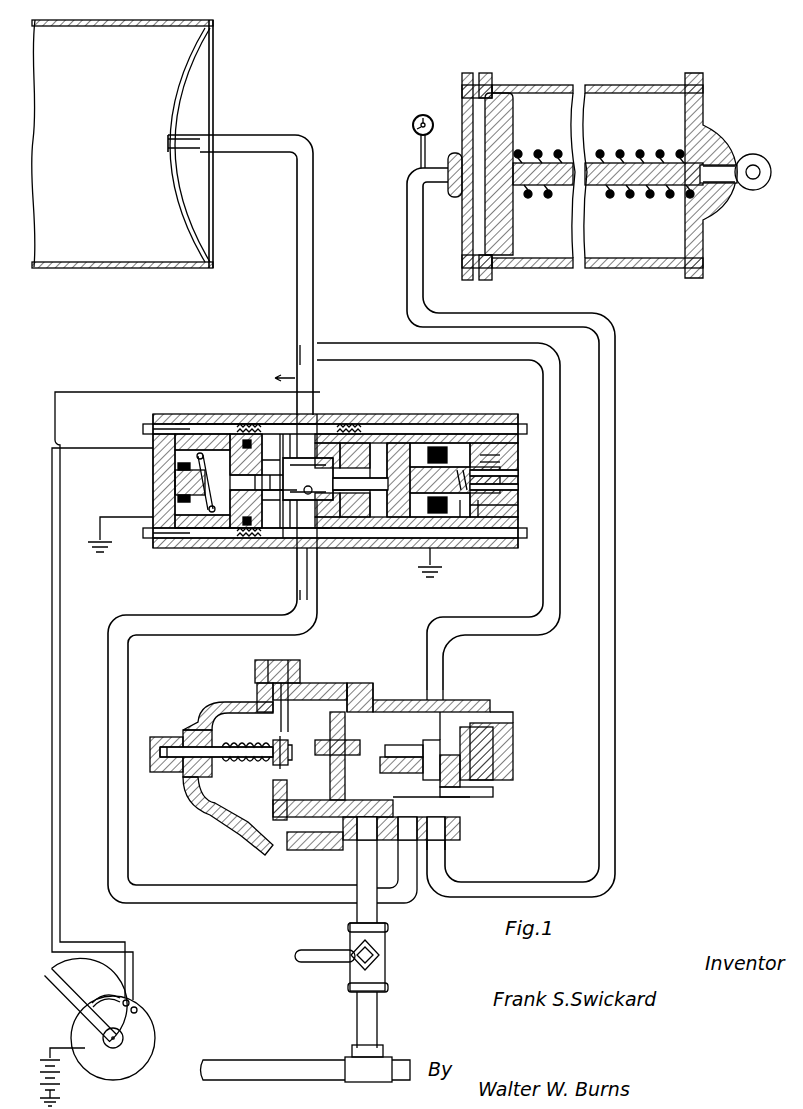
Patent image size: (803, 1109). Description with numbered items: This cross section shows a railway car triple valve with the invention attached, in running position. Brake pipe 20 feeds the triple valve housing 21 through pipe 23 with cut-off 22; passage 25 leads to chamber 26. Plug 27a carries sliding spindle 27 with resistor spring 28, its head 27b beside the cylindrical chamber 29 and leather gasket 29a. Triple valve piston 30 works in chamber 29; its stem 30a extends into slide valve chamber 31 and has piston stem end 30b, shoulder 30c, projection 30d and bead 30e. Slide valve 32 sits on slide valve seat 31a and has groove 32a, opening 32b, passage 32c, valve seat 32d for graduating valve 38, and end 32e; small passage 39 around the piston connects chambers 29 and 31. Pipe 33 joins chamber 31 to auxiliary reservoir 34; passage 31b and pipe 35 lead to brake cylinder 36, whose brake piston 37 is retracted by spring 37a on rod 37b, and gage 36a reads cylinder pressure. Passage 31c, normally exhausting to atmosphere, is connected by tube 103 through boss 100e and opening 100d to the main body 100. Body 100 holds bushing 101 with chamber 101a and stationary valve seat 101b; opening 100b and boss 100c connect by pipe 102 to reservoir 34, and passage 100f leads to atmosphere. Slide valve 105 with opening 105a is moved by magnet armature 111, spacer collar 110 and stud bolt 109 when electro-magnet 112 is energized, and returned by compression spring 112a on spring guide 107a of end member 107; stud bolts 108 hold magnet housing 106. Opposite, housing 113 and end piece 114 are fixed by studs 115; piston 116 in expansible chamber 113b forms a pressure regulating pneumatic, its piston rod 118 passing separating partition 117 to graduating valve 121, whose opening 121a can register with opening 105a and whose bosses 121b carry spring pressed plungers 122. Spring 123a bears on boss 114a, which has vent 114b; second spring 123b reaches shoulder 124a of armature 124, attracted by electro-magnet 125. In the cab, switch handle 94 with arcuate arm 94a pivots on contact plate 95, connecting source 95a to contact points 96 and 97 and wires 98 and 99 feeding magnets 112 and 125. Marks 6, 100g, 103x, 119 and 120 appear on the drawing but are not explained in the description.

The brake pipe 20 is at (280, 1060).
The triple valve housing 21 is at (268, 660).
The cut-off 22 is at (350, 973).
The pipe 23 is at (357, 910).
The passage 25 is at (300, 848).
The chamber 26 is at (240, 795).
The spindle 27 is at (225, 752).
The plug 27a is at (165, 737).
The head 27b is at (276, 746).
The resistor spring 28 is at (245, 760).
The chamber 29 is at (312, 690).
The leather gasket 29a is at (258, 702).
The triple valve piston 30 is at (360, 700).
The stem 30a is at (485, 712).
The piston stem end 30b is at (495, 725).
The shoulder 30c is at (440, 740).
The projection 30d is at (325, 745).
The bead 30e is at (328, 797).
The slide valve chamber 31 is at (452, 705).
The slide valve seat 31a is at (350, 850).
The passage 31b is at (445, 810).
The passage 31c is at (412, 885).
The slide valve 32 is at (485, 758).
The groove or chamber 32a is at (400, 745).
The opening 32b is at (428, 742).
The passage 32c is at (452, 755).
The valve seat 32d is at (470, 792).
The end 32e is at (475, 782).
The pipe 33 is at (275, 152).
The auxiliary reservoir 34 is at (146, 260).
The pipe 35 is at (406, 220).
The brake cylinder 36 is at (478, 113).
The gage 36a is at (414, 131).
The brake piston 37 is at (505, 100).
The spring 37a is at (642, 150).
The rod 37b is at (668, 198).
The graduating valve 38 is at (405, 745).
The small passage 39 is at (345, 683).
The switch handle 94 is at (62, 996).
The arcuate contacting arm 94a is at (102, 995).
The contact plate 95 is at (135, 1065).
The source of electric current 95a is at (60, 1075).
The contact point 96 is at (132, 1000).
The contact point 97 is at (140, 1010).
The wire 98 is at (122, 448).
The wire 99 is at (130, 392).
The passage 6 is at (290, 482).
The main body 100 is at (235, 545).
The opening 100b is at (310, 400).
The boss 100c is at (312, 420).
The opening 100d is at (317, 570).
The boss 100e is at (270, 545).
The passage 100f is at (283, 548).
The passage 100g is at (338, 545).
The bushing 101 is at (375, 540).
The chamber 101a is at (262, 437).
The stationary valve seat 101b is at (268, 535).
The pipe 102 is at (297, 362).
The tube 103 is at (408, 935).
The return pipe 103x is at (225, 622).
The slide valve 105 is at (262, 435).
The opening 105a is at (310, 545).
The magnet housing 106 is at (170, 550).
The end member 107 is at (150, 462).
The spring guide 107a is at (180, 483).
The stud bolts 108 is at (143, 428).
The stud bolt 109 is at (210, 540).
The spacer collar 110 is at (248, 438).
The magnet armature 111 is at (225, 415).
The electro-magnet 112 is at (205, 440).
The compression spring 112a is at (175, 497).
The housing 113 is at (505, 510).
The expansible chamber 113b is at (460, 540).
The end piece 114 is at (508, 437).
The boss 114a is at (520, 471).
The vent 114b is at (520, 488).
The studs 115 is at (520, 531).
The piston 116 is at (452, 460).
The separating partition 117 is at (380, 437).
The piston rod 118 is at (371, 480).
The piston 119 is at (425, 460).
The chamber 120 is at (432, 443).
The graduating valve 121 is at (385, 545).
The opening 121a is at (338, 455).
The bosses 121b is at (350, 500).
The spring pressed plungers 122 is at (287, 435).
The spring 123a is at (465, 520).
The second spring 123b is at (480, 520).
The magnet armature 124 is at (500, 455).
The shoulder 124a is at (500, 462).
The electro-magnet 125 is at (462, 470).